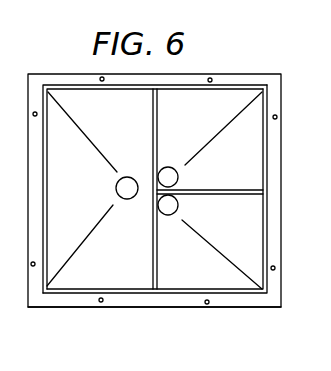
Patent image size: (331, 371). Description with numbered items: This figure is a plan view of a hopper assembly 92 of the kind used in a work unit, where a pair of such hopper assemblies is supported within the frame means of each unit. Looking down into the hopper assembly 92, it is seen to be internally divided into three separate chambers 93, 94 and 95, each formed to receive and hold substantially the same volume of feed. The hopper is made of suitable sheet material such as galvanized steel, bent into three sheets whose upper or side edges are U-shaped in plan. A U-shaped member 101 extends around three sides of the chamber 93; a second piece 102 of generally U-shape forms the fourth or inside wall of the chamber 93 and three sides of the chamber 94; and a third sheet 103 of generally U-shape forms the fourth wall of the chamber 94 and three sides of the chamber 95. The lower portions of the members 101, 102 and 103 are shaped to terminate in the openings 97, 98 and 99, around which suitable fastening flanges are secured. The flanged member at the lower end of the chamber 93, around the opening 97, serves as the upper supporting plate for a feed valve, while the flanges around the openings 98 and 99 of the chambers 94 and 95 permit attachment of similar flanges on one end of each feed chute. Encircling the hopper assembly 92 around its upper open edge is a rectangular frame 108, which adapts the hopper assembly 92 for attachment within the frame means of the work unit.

The hopper assembly 92 is at (224, 66).
The chamber 93 is at (128, 150).
The chamber 94 is at (208, 270).
The chamber 95 is at (206, 143).
The opening 97 is at (118, 194).
The opening 98 is at (178, 202).
The opening 99 is at (177, 181).
The U-shaped member 101 is at (113, 260).
The second piece 102 is at (259, 246).
The third sheet 103 is at (262, 155).
The rectangular frame 108 is at (133, 303).